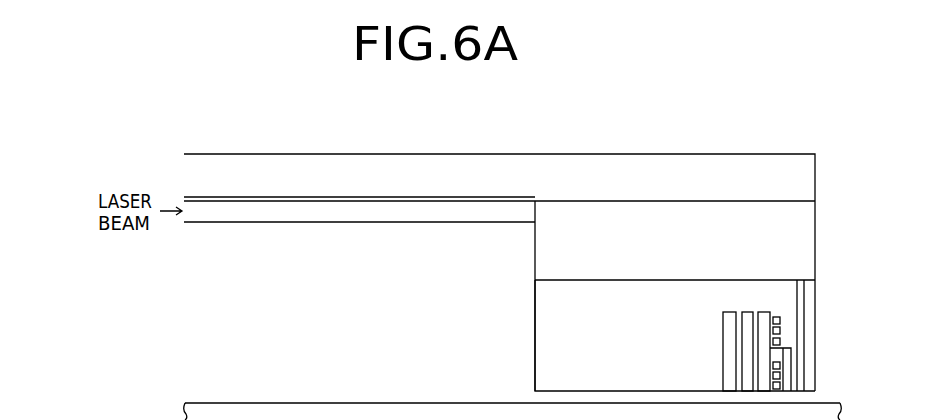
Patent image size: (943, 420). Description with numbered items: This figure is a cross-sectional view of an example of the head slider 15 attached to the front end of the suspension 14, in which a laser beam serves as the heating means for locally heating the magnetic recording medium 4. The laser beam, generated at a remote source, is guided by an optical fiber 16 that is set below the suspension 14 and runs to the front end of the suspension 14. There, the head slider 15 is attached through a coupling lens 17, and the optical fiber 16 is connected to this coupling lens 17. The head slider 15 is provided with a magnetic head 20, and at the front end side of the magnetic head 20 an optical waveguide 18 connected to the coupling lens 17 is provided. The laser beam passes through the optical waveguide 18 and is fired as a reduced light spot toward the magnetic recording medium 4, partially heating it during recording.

The magnetic recording medium 4 is at (278, 402).
The suspension 14 is at (380, 168).
The head slider 15 is at (548, 333).
The optical fiber 16 is at (349, 210).
The coupling lens 17 is at (817, 235).
The optical waveguide 18 is at (800, 345).
The magnetic head 20 is at (722, 303).